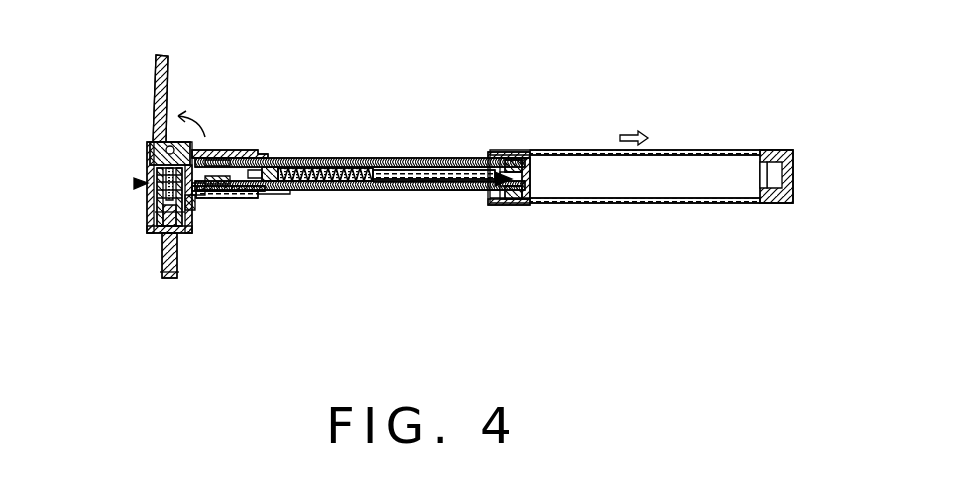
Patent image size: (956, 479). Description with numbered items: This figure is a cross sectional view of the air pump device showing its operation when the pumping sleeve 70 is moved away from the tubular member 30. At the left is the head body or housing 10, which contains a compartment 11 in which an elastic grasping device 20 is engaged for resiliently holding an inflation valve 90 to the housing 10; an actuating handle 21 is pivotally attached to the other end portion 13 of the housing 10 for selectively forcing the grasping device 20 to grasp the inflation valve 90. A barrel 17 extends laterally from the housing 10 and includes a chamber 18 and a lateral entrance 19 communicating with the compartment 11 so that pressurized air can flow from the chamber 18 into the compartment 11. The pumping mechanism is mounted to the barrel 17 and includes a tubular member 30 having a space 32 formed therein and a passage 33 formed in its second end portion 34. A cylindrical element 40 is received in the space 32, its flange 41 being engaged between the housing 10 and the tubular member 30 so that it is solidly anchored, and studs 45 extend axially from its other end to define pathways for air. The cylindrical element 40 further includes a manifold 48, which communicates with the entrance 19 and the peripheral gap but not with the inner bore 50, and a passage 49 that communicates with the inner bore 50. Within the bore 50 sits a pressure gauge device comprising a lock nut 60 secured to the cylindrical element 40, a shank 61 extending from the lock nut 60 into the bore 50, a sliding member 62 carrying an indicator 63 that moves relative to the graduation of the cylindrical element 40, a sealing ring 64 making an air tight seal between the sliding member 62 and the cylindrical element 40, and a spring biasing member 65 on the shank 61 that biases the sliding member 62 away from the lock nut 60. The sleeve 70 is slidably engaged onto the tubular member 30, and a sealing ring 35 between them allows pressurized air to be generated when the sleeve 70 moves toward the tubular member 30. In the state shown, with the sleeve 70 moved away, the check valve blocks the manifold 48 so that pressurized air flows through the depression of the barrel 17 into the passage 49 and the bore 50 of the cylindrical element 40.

The housing 10 is at (152, 200).
The compartment 11 is at (147, 217).
The other end portion 13 is at (147, 152).
The barrel 17 is at (240, 200).
The chamber 18 is at (252, 153).
The entrance 19 is at (197, 207).
The grasping device 20 is at (135, 183).
The handle 21 is at (155, 65).
The tubular member 30 is at (468, 160).
The space 32 is at (425, 160).
The passage 33 is at (525, 194).
The second end portion 34 is at (542, 160).
The sealing ring 35 is at (513, 201).
The cylindrical element 40 is at (397, 160).
The flange 41 is at (192, 148).
The studs 45 is at (522, 156).
The manifold 48 is at (203, 197).
The passage 49 is at (215, 148).
The inner bore 50 is at (233, 148).
The lock nut 60 is at (505, 192).
The shank 61 is at (430, 190).
The sliding member 62 is at (333, 160).
The indicator 63 is at (263, 193).
The sealing ring 64 is at (277, 158).
The spring biasing member 65 is at (390, 190).
The sleeve 70 is at (688, 150).
The inflation valve 90 is at (162, 258).